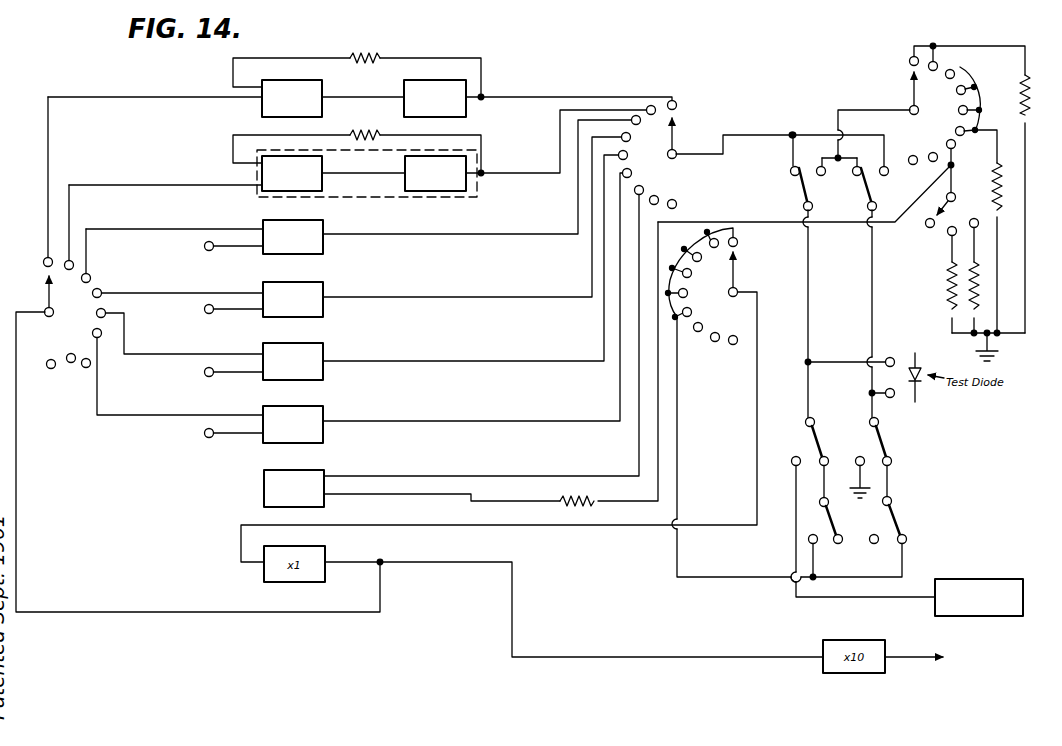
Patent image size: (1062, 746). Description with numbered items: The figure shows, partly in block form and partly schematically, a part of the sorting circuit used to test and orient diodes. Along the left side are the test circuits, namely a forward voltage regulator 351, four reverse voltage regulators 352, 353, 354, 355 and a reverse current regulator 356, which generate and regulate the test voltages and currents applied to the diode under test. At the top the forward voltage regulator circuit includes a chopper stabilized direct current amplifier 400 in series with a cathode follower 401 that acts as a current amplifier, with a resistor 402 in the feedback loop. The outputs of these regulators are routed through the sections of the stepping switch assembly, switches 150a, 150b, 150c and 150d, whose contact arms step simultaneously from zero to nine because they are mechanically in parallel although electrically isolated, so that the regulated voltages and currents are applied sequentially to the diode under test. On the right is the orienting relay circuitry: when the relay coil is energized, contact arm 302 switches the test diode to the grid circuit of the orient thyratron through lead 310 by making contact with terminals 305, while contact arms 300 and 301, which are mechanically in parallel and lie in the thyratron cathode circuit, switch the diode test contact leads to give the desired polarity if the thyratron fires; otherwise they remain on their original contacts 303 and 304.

The chopper stabilized direct current amplifier 400 is at (295, 80).
The cathode follower 401 is at (404, 105).
The resistor 402 is at (370, 50).
The forward voltage regulator 351 is at (322, 186).
The reverse voltage regulator 352 is at (324, 251).
The reverse voltage regulator 353 is at (324, 292).
The reverse voltage regulator 354 is at (324, 353).
The reverse voltage regulator 355 is at (324, 417).
The reverse current regulator 356 is at (324, 477).
The switch 150a is at (36, 304).
The switch 150b is at (732, 318).
The switch 150c is at (658, 178).
The switch 150d is at (895, 104).
The contact arm 300 is at (829, 521).
The contact arm 301 is at (801, 187).
The contact arm 302 is at (819, 446).
The switch contact 303 is at (843, 540).
The switch contact 304 is at (816, 170).
The terminal 305 is at (796, 456).
The lead 310 is at (888, 597).